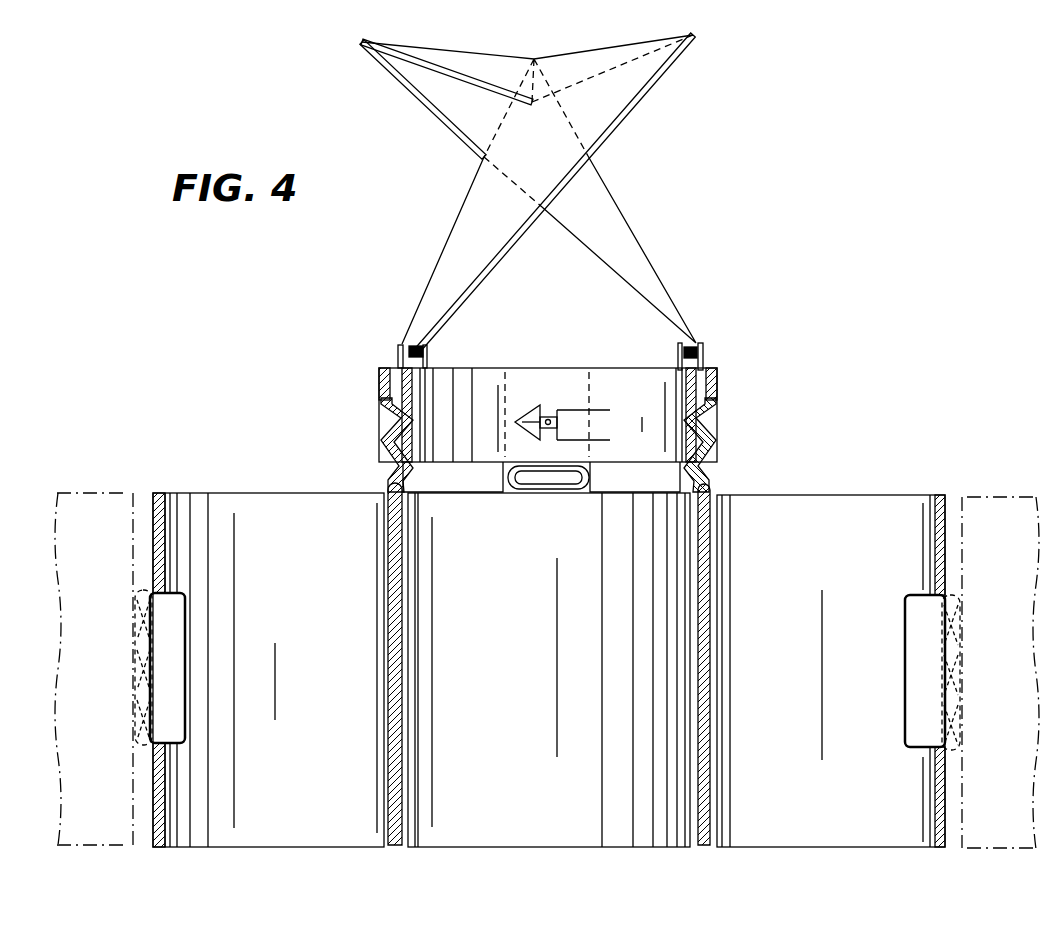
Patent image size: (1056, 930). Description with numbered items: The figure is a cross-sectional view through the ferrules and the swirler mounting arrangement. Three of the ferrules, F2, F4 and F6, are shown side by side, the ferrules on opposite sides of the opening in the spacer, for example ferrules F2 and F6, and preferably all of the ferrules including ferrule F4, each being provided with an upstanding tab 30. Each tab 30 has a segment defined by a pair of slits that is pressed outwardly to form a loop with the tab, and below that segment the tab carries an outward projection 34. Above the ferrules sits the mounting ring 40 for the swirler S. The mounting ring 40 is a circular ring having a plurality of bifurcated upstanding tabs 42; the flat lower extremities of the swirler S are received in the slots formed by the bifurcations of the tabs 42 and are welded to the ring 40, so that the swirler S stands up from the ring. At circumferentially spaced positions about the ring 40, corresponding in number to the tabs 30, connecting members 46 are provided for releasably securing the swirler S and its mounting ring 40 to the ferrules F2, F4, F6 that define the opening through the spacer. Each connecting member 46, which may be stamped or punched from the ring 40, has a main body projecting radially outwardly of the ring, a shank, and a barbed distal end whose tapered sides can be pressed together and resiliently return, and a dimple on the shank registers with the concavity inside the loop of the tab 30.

The swirler S is at (442, 250).
The bifurcated upstanding tabs 42 is at (397, 352).
The mounting ring 40 is at (610, 368).
The connecting member 46 is at (575, 408).
The upstanding tab 30 is at (723, 392).
The outward projection 34 is at (532, 493).
The ferrule F2 is at (287, 493).
The ferrule F4 is at (577, 835).
The ferrule F6 is at (883, 495).